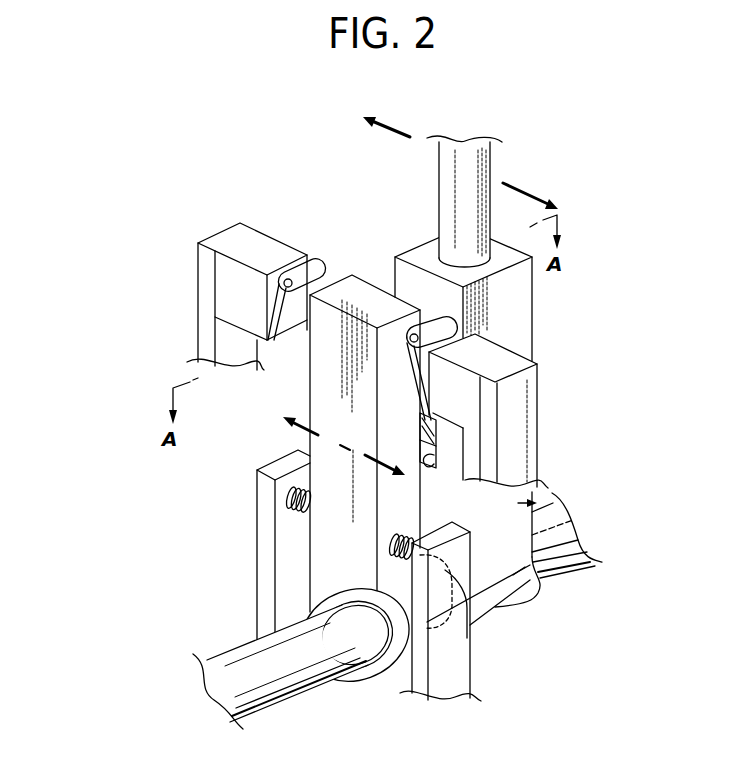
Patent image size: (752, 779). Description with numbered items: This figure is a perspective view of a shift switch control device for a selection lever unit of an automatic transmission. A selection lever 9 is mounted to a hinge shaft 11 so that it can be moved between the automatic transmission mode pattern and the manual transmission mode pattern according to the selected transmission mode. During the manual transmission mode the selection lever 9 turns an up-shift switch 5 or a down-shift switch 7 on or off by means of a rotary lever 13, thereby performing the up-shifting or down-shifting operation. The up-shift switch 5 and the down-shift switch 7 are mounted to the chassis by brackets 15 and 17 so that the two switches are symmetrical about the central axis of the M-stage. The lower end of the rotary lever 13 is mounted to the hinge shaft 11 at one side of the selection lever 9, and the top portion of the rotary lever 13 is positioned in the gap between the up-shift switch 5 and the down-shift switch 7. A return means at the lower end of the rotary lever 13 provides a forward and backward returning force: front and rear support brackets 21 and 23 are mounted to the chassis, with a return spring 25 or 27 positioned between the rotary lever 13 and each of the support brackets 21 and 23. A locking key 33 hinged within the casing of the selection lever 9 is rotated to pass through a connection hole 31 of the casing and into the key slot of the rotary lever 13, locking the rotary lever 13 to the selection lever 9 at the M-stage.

The up-shift switch 5 is at (277, 248).
The down-shift switch 7 is at (493, 352).
The selection lever 9 is at (538, 503).
The hinge shaft 11 is at (553, 573).
The rotary lever 13 is at (316, 393).
The bracket 15 is at (213, 244).
The bracket 17 is at (538, 380).
The front support bracket 21 is at (264, 558).
The rear support bracket 23 is at (471, 672).
The return spring 25 is at (290, 505).
The return spring 27 is at (500, 608).
The connection hole 31 is at (432, 463).
The locking key 33 is at (433, 432).